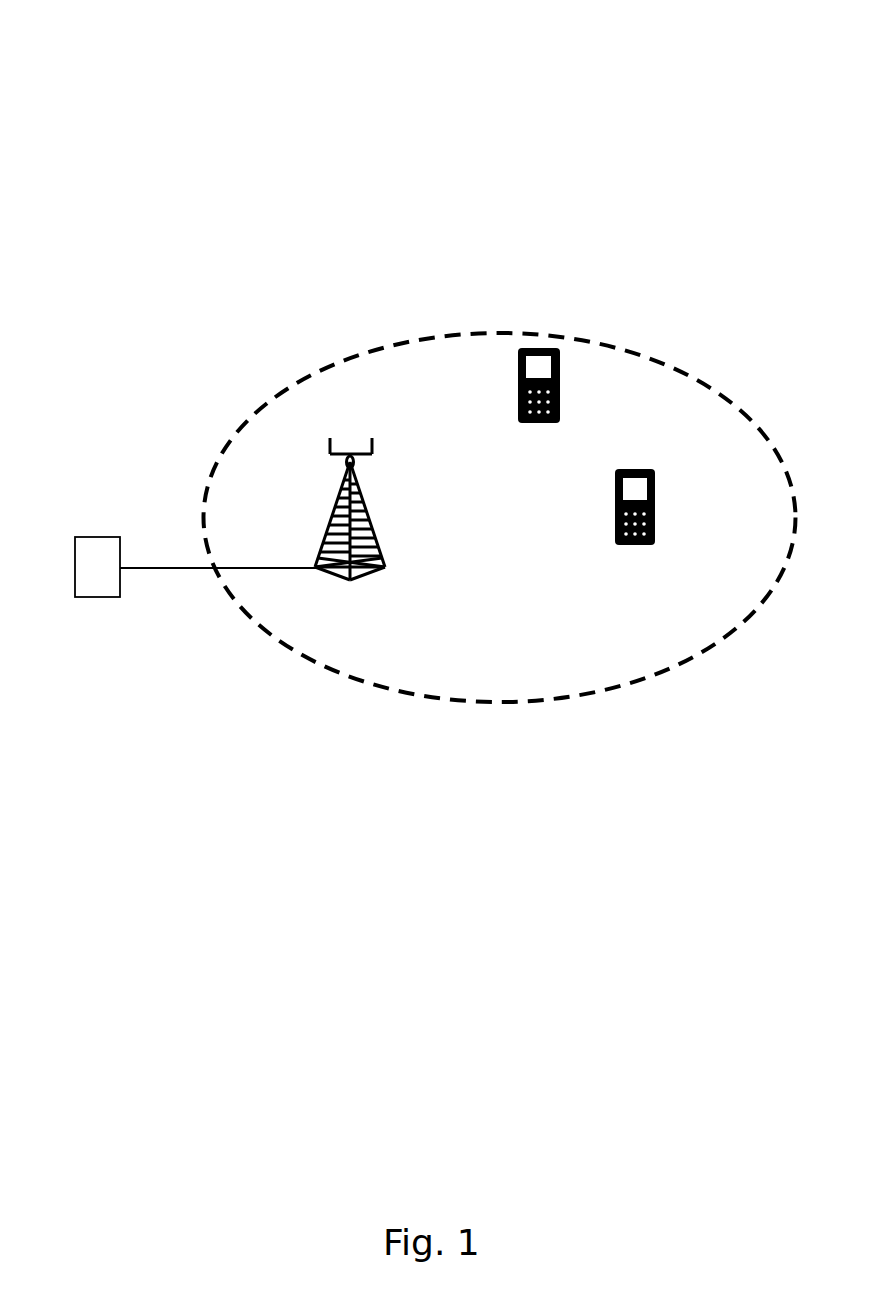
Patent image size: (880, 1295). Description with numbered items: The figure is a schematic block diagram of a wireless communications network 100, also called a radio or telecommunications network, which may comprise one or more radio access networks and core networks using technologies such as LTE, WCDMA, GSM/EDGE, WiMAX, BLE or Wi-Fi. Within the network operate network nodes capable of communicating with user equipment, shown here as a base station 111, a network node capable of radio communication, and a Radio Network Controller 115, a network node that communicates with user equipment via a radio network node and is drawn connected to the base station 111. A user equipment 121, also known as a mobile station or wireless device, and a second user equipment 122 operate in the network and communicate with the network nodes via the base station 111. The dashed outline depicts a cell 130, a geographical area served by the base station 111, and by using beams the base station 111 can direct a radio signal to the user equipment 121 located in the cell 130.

The wireless communications network 100 is at (457, 203).
The base station 111 is at (330, 454).
The Radio Network Controller 115 is at (117, 597).
The user equipment 121 is at (615, 480).
The second user equipment 122 is at (518, 363).
The cell 130 is at (300, 660).